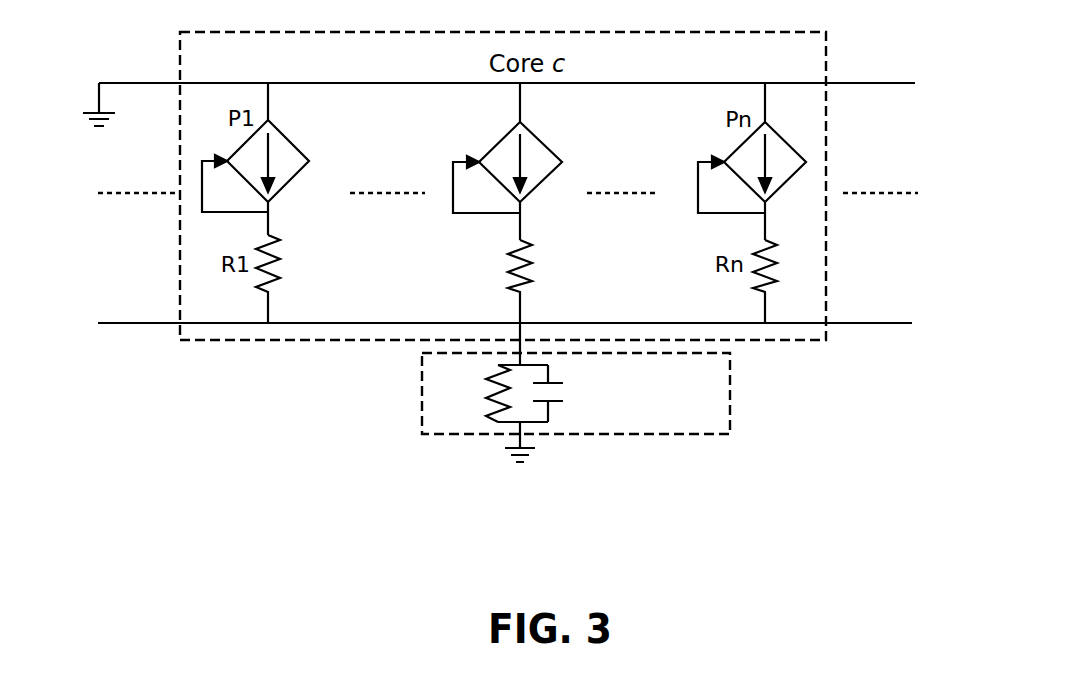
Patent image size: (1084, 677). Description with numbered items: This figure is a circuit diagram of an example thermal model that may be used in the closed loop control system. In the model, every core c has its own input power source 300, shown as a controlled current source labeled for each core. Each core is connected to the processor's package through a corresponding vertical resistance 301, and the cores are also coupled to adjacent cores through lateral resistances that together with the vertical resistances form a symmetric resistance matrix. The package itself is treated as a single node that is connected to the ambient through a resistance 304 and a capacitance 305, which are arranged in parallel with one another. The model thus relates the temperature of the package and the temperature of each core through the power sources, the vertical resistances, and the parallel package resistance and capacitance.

The input power source 300 is at (539, 139).
The vertical resistance 301 is at (535, 268).
The resistance R_p 304 is at (485, 413).
The capacitance C_p 305 is at (573, 416).